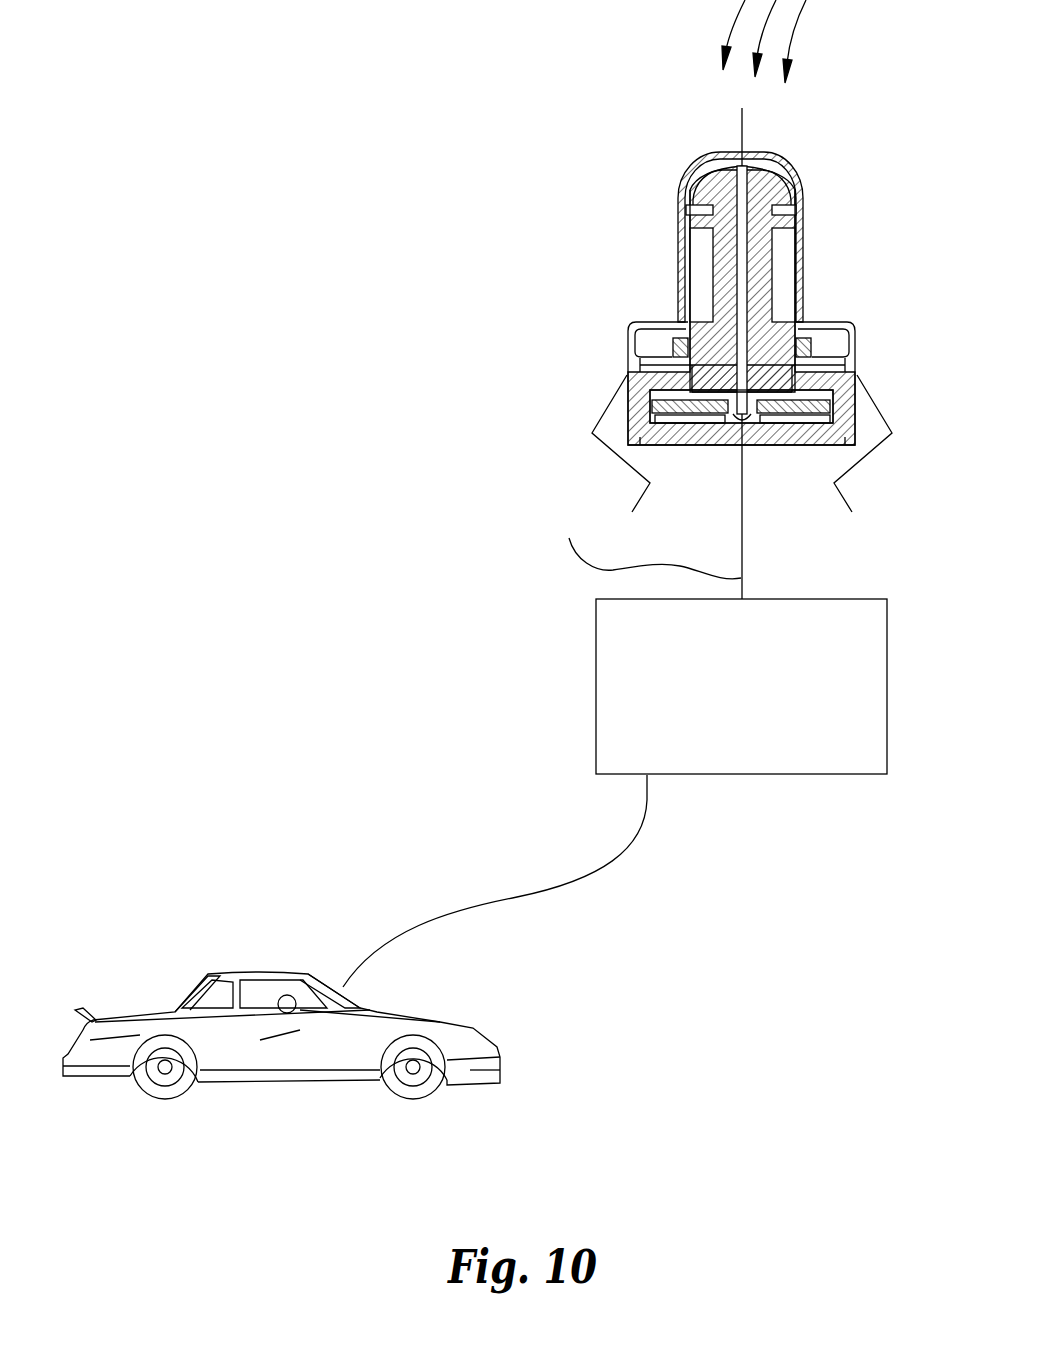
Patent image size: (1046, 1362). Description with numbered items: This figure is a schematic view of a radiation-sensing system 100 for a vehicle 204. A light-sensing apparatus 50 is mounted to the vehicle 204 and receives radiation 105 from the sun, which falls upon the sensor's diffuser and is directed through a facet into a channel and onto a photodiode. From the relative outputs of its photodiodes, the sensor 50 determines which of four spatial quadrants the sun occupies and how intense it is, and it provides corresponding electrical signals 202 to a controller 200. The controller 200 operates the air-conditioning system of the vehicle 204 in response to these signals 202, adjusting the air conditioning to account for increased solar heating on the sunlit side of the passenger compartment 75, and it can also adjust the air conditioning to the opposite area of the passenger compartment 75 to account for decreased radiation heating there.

The light-sensing apparatus 50 is at (845, 200).
The passenger compartment 75 is at (279, 1012).
The sensor system 100 is at (467, 227).
The radiation 105 is at (797, 25).
The controller 200 is at (596, 666).
The electrical signals 202 is at (646, 545).
The vehicle 204 is at (157, 947).